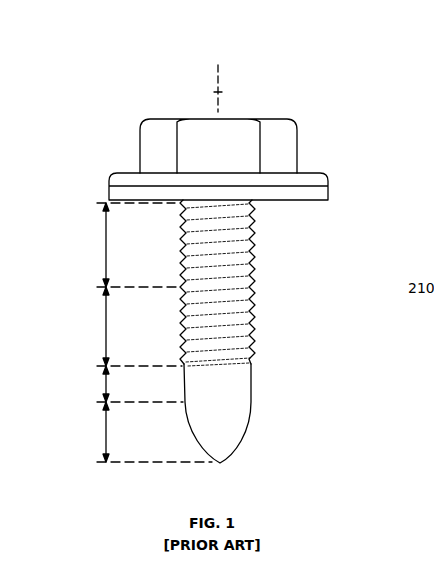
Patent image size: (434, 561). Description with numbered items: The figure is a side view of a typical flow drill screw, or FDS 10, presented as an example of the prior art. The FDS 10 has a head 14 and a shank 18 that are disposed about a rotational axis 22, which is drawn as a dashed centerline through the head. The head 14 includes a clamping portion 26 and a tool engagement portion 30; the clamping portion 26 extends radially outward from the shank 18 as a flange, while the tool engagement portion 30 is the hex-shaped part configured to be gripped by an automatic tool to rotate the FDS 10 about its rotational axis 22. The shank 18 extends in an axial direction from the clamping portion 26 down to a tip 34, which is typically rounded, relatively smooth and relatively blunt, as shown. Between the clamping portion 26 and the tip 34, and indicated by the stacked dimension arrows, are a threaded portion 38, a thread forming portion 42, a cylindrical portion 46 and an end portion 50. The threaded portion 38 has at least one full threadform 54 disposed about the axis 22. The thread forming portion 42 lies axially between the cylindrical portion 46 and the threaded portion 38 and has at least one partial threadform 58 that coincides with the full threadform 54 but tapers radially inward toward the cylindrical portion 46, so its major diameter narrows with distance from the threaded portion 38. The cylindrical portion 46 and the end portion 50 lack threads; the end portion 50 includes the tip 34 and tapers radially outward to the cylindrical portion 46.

The flow drill screw 10 is at (215, 274).
The head 14 is at (205, 145).
The shank 18 is at (237, 387).
The rotational axis 22 is at (222, 93).
The clamping portion 26 is at (105, 192).
The tool engagement portion 30 is at (200, 119).
The tip 34 is at (220, 463).
The threaded portion 38 is at (106, 248).
The thread forming portion 42 is at (106, 324).
The cylindrical portion 46 is at (106, 394).
The end portion 50 is at (106, 440).
The full threadform 54 is at (252, 242).
The partial threadform 58 is at (251, 343).